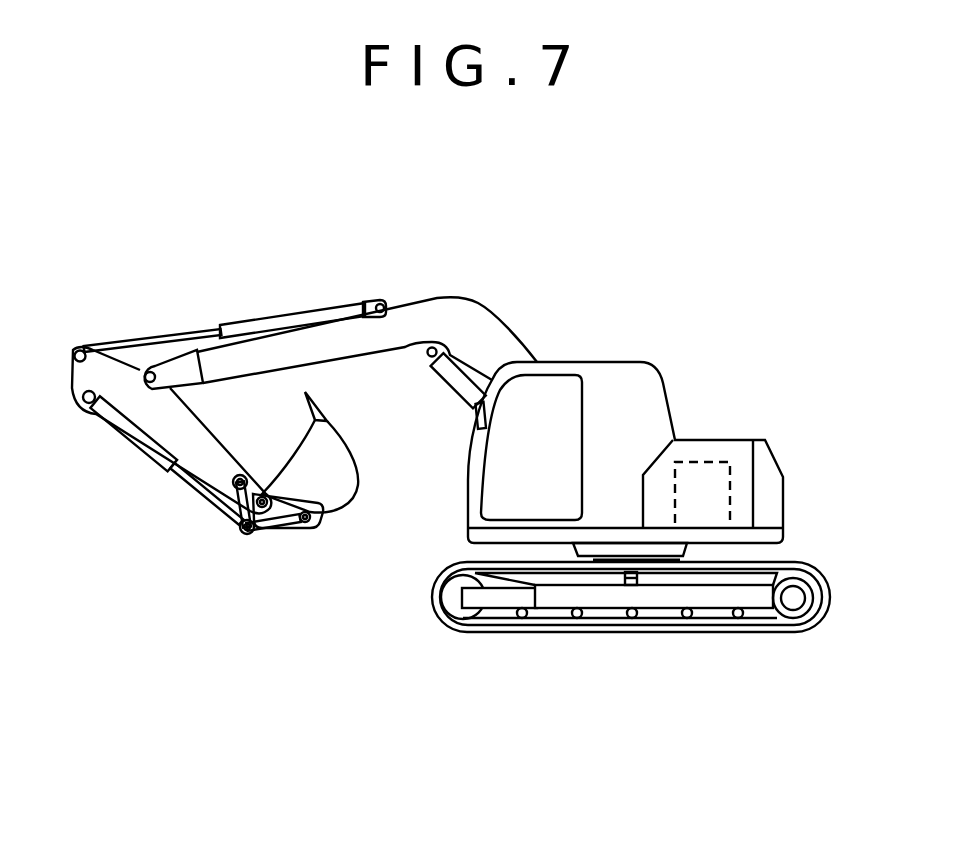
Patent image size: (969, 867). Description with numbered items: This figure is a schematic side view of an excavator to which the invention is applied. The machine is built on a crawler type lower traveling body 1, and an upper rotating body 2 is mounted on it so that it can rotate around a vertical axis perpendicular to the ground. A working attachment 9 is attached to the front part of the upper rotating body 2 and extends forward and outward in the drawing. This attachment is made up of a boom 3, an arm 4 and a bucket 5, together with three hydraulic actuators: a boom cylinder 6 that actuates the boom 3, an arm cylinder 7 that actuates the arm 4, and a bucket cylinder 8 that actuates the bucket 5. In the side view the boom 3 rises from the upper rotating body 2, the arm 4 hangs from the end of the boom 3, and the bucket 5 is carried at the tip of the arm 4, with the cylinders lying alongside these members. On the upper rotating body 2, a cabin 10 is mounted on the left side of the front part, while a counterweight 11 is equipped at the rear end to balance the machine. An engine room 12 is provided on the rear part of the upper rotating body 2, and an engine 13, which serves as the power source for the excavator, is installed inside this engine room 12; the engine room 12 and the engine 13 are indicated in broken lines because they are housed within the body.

The lower traveling body 1 is at (623, 633).
The upper rotating body 2 is at (670, 404).
The boom 3 is at (475, 315).
The arm 4 is at (150, 412).
The bucket 5 is at (360, 487).
The boom cylinder 6 is at (458, 387).
The arm cylinder 7 is at (285, 320).
The bucket cylinder 8 is at (148, 448).
The working attachment 9 is at (304, 370).
The cabin 10 is at (653, 395).
The counterweight 11 is at (783, 498).
The engine room 12 is at (748, 432).
The engine 13 is at (738, 480).